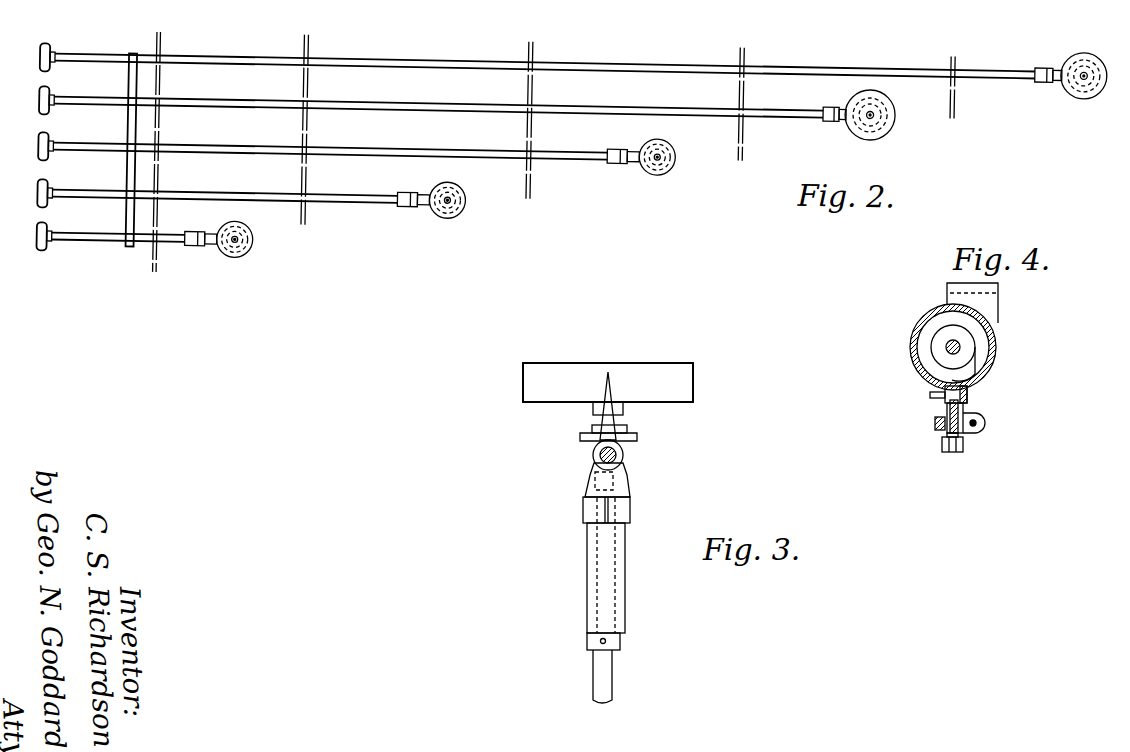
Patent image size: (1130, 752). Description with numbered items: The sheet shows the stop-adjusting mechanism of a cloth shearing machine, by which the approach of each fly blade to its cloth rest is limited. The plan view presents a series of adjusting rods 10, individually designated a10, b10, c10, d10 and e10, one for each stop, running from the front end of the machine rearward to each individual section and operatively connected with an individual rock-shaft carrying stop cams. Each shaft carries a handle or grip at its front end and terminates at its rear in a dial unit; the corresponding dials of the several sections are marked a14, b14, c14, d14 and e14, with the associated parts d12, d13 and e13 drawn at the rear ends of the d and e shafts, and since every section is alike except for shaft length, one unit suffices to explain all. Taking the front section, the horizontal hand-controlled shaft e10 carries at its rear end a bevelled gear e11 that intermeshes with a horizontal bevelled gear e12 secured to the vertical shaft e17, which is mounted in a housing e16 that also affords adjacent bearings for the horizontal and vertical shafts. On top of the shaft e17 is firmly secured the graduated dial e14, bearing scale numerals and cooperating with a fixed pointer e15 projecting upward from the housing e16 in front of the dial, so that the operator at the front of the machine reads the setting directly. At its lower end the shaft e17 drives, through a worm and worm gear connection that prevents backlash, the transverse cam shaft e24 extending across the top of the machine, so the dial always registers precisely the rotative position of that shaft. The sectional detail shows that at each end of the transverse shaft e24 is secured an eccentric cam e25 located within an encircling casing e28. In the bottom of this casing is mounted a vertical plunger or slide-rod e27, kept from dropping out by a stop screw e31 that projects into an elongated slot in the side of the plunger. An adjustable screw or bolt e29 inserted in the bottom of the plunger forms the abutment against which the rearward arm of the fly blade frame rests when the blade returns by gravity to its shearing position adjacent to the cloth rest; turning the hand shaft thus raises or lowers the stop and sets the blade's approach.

In FIG. 2, the supporting bar 10 is at (133, 247).
In FIG. 2, the adjusting rod a10 is at (123, 62).
In FIG. 2, the adjusting rod b10 is at (70, 104).
In FIG. 2, the adjusting rod c10 is at (68, 150).
In FIG. 2, the adjusting rod d10 is at (122, 197).
In FIG. 2, the hand-controlled shaft e10 is at (66, 241).
In FIG. 3, the hand-controlled shaft e10 is at (620, 452).
In FIG. 2, the indicator disk of rod a a14 is at (1087, 80).
In FIG. 2, the indicator disk of rod b b14 is at (888, 121).
In FIG. 2, the indicator disk of rod c c14 is at (668, 161).
In FIG. 2, the indicator disk of rod d d14 is at (458, 178).
In FIG. 2, the center pin of disk d d13 is at (456, 193).
In FIG. 2, the clamp fitting of rod d d12 is at (456, 206).
In FIG. 2, the graduated dial e14 is at (241, 220).
In FIG. 3, the graduated dial e14 is at (693, 370).
In FIG. 2, the center pin of disk e e13 is at (239, 242).
In FIG. 2, the horizontal bevelled gear e12 is at (257, 238).
In FIG. 3, the horizontal bevelled gear e12 is at (585, 437).
In FIG. 3, the bevelled gear e11 is at (601, 452).
In FIG. 3, the fixed pointer e15 is at (609, 408).
In FIG. 3, the housing e16 is at (622, 468).
In FIG. 3, the vertical shaft e17 is at (612, 673).
In FIG. 4, the transverse shaft e24 is at (949, 344).
In FIG. 4, the eccentric cam e25 is at (970, 347).
In FIG. 4, the plunger e27 is at (968, 410).
In FIG. 4, the casing e28 is at (914, 362).
In FIG. 4, the adjustable screw e29 is at (942, 445).
In FIG. 4, the stop screw e31 is at (930, 395).